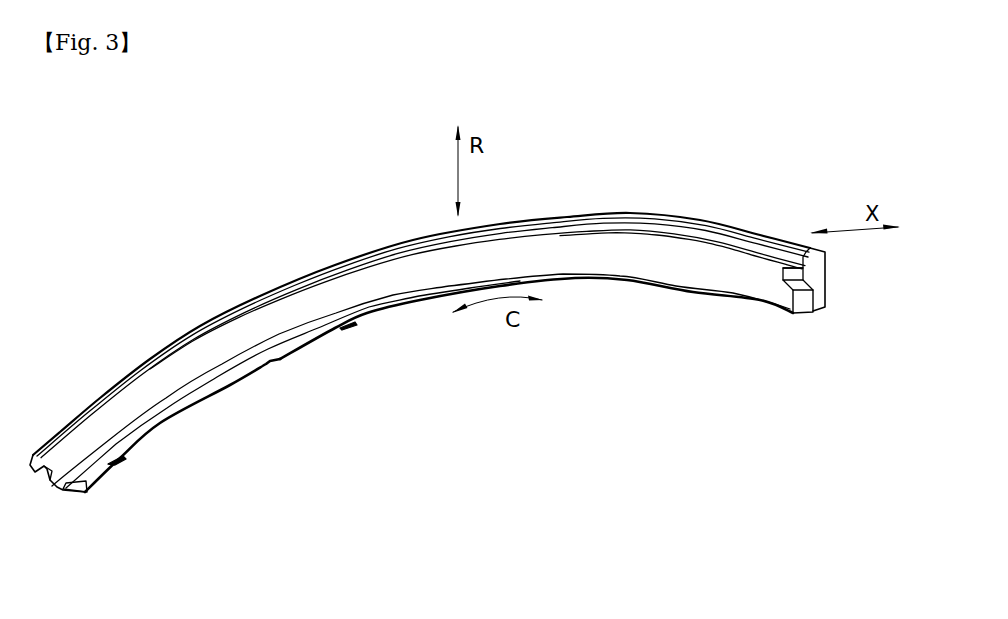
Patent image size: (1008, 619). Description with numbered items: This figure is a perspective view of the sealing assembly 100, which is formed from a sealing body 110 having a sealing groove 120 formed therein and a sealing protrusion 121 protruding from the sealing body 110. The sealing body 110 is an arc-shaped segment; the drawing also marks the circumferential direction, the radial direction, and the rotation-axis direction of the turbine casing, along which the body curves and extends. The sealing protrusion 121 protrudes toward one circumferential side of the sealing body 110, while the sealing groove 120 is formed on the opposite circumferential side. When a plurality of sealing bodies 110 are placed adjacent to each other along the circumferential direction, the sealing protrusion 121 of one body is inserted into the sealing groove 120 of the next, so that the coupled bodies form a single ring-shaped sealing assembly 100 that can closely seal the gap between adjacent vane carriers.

The sealing assembly 100 is at (422, 386).
The sealing body 110 is at (672, 263).
The sealing groove 120 is at (44, 481).
The sealing protrusion 121 is at (807, 308).